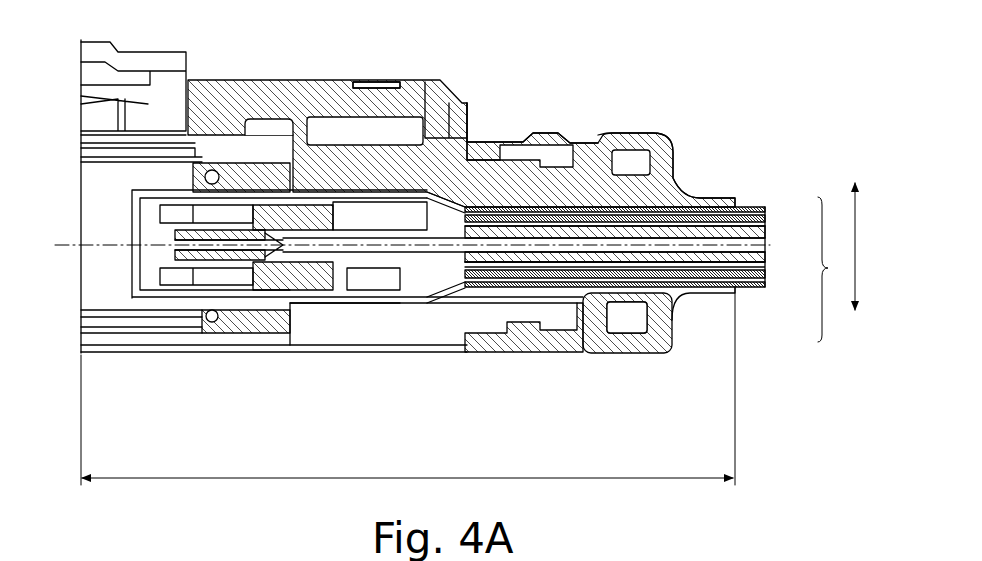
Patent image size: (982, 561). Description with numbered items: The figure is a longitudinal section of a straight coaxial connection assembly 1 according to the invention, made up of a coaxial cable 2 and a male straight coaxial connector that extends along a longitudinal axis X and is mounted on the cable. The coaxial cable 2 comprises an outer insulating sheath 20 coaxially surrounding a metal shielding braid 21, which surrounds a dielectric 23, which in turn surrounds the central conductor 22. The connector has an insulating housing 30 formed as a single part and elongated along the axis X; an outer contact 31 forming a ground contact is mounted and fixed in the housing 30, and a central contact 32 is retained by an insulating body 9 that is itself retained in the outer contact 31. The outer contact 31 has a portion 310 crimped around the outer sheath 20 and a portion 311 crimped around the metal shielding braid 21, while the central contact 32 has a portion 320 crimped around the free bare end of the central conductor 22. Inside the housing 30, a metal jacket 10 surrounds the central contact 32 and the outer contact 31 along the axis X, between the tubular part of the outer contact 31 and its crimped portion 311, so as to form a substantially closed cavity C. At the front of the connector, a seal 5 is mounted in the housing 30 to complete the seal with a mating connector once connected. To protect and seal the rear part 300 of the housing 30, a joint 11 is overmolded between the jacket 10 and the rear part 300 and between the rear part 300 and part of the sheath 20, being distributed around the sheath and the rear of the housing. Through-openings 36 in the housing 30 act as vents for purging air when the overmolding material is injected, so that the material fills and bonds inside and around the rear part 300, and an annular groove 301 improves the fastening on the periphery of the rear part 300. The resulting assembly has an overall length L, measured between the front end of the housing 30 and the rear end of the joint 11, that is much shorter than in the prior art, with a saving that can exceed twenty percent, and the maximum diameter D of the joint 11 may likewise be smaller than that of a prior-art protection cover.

The straight coaxial connection assembly 1 is at (72, 122).
The coaxial cable 2 is at (833, 269).
The seal 5 is at (210, 325).
The insulating body 9 is at (243, 133).
The metal jacket 10 is at (403, 138).
The joint 11 is at (672, 185).
The outer insulating sheath 20 is at (768, 283).
The metal shielding braid 21 is at (768, 212).
The central conductor 22 is at (333, 203).
The dielectric 23 is at (768, 239).
The insulating housing 30 is at (87, 341).
The outer contact 31 is at (293, 353).
The central contact 32 is at (282, 118).
The through-openings 36 is at (598, 133).
The rear part of the housing 300 is at (505, 165).
The annular groove 301 is at (522, 325).
The portion of the outer contact crimped around the outer sheath 310 is at (628, 332).
The portion of the outer contact crimped around the shielding braid 311 is at (497, 165).
The portion of the central contact crimped around the central conductor 320 is at (372, 305).
The cavity C is at (397, 208).
The maximum diameter of the joint D is at (870, 246).
The overall length L is at (408, 396).
The longitudinal axis X is at (397, 245).